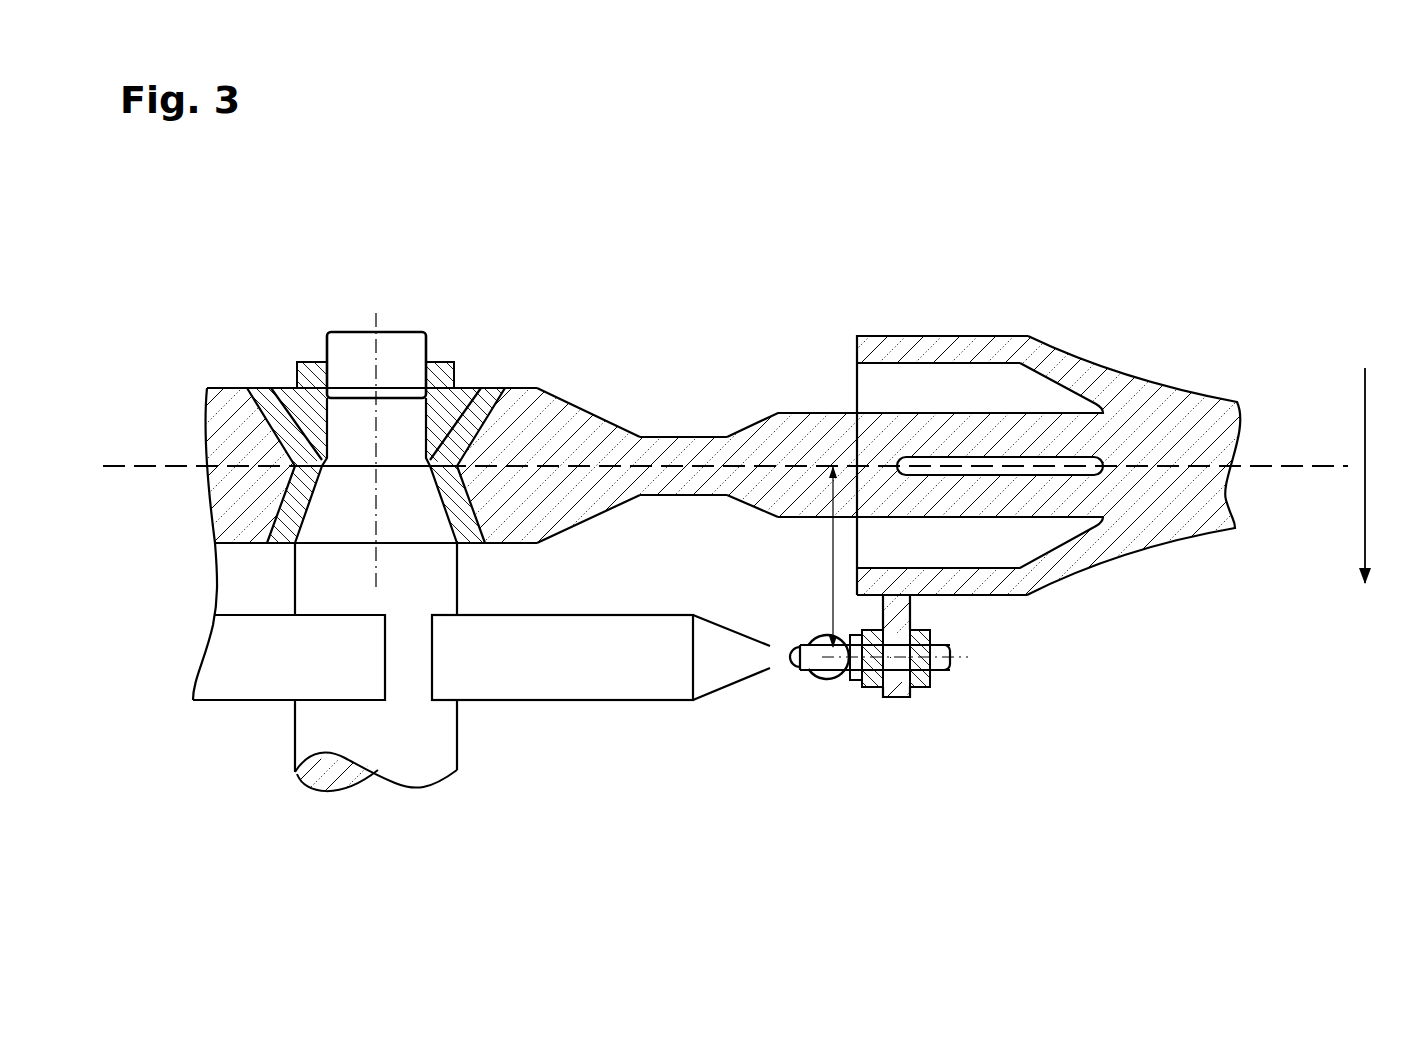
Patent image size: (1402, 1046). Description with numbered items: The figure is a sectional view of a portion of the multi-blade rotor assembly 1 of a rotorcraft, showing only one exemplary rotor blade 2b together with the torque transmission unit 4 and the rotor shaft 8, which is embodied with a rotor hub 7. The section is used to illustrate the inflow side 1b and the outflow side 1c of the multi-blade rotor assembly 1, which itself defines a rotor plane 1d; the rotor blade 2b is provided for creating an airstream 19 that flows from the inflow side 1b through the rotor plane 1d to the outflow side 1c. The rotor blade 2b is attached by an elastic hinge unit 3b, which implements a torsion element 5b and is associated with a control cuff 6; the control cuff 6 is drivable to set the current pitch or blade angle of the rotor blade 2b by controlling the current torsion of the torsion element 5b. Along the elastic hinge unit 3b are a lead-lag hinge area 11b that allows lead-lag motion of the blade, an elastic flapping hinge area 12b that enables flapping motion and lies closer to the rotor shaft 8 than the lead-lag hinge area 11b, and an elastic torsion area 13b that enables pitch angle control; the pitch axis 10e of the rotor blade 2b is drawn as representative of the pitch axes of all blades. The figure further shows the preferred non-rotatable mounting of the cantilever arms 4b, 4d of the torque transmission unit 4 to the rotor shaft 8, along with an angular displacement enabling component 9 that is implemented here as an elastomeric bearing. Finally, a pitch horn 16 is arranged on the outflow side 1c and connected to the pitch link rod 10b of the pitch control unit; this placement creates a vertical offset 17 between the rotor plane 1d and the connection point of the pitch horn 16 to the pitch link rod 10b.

The multi-blade rotor assembly 1 is at (739, 404).
The inflow side 1b is at (1065, 449).
The outflow side 1c is at (1147, 559).
The rotor plane 1d is at (133, 464).
The rotor blade 2b is at (1183, 435).
The elastic hinge unit 3b is at (717, 398).
The torque transmission unit 4 is at (481, 710).
The cantilever arm 4b is at (547, 680).
The cantilever arm 4d is at (223, 680).
The torsion element 5b is at (573, 396).
The control cuff 6 is at (941, 331).
The rotor hub 7 is at (212, 384).
The rotor shaft 8 is at (390, 745).
The angular displacement enabling component 9 is at (268, 400).
The pitch link rod 10b is at (805, 668).
The pitch axis 10e is at (1137, 468).
The lead-lag hinge area 11b is at (806, 398).
The elastic flapping hinge area 12b is at (683, 499).
The elastic torsion area 13b is at (1008, 409).
The pitch horn 16 is at (900, 606).
The vertical offset 17 is at (832, 567).
The airstream 19 is at (1362, 397).